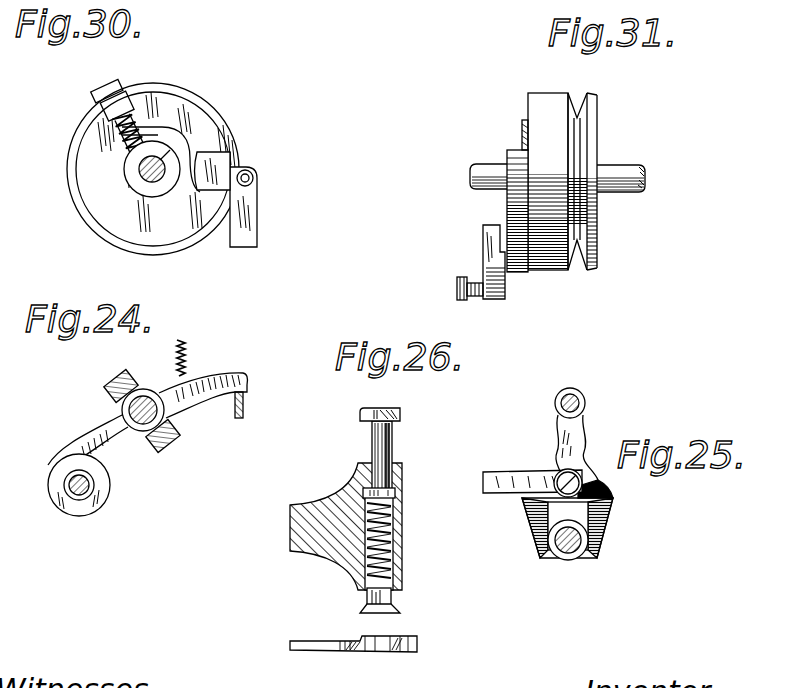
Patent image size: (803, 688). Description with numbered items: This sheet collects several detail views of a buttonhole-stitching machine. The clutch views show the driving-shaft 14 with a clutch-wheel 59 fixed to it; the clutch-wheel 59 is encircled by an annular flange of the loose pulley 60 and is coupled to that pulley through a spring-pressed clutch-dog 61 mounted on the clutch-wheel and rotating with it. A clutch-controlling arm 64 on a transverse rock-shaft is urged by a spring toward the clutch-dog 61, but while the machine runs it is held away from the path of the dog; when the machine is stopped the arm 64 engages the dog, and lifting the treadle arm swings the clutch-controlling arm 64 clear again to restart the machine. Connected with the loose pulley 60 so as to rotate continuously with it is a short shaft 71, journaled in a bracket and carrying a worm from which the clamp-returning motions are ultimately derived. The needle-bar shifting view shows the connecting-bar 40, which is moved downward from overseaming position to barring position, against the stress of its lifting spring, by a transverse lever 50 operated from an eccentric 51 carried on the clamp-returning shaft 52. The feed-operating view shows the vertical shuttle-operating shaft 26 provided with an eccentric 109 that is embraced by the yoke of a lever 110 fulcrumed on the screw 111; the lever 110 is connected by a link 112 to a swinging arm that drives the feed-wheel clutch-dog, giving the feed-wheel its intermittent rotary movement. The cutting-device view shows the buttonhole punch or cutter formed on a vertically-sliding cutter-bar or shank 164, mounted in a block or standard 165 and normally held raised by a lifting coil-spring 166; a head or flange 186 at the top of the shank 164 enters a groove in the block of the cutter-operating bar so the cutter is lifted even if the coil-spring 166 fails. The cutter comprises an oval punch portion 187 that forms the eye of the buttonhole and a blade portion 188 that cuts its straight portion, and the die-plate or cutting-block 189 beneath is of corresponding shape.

In FIG. 30, the clutch-wheel 59 is at (82, 161).
In FIG. 30, the clutch-dog 61 is at (200, 128).
In FIG. 31, the clutch-dog 61 is at (508, 222).
In FIG. 30, the driving-shaft 14 is at (140, 176).
In FIG. 31, the driving-shaft 14 is at (480, 167).
In FIG. 24, the driving-shaft 14 is at (141, 396).
In FIG. 30, the clutch-controlling arm 64 is at (257, 215).
In FIG. 31, the clutch-controlling arm 64 is at (508, 294).
In FIG. 31, the loose pulley 60 is at (548, 100).
In FIG. 31, the short shaft 71 is at (626, 172).
In FIG. 24, the transverse lever 50 is at (222, 382).
In FIG. 24, the connecting-bar 40 is at (244, 410).
In FIG. 24, the eccentric 51 is at (82, 514).
In FIG. 24, the clamp-returning shaft 52 is at (94, 484).
In FIG. 26, the head or flange 186 is at (402, 413).
In FIG. 26, the cutter-bar or shank 164 is at (372, 442).
In FIG. 26, the block or standard 165 is at (405, 506).
In FIG. 26, the lifting coil-spring 166 is at (400, 545).
In FIG. 26, the oval punch portion 187 is at (370, 610).
In FIG. 26, the blade portion 188 is at (400, 606).
In FIG. 26, the die-plate or cutting-block 189 is at (405, 649).
In FIG. 25, the screw 111 is at (585, 398).
In FIG. 25, the link 112 is at (504, 477).
In FIG. 25, the lever 110 is at (614, 510).
In FIG. 25, the eccentric 109 is at (576, 560).
In FIG. 25, the vertical shuttle-operating shaft 26 is at (552, 559).